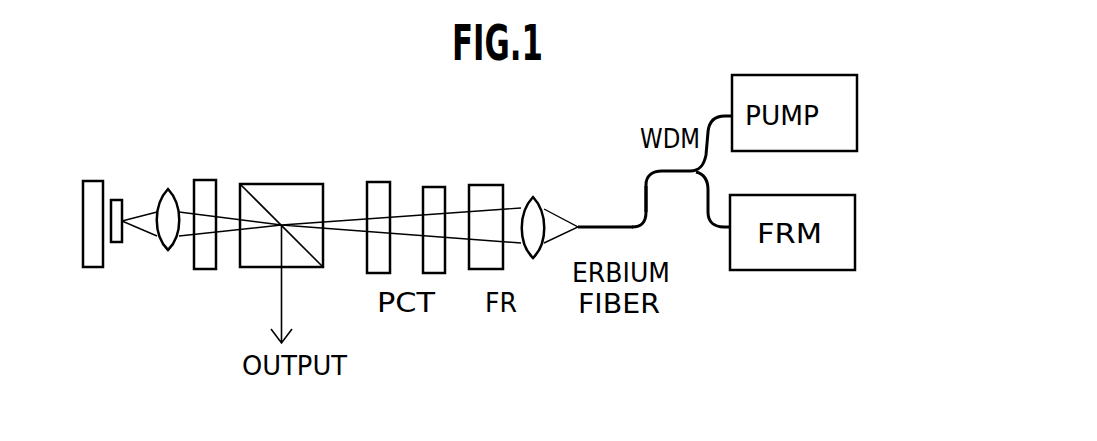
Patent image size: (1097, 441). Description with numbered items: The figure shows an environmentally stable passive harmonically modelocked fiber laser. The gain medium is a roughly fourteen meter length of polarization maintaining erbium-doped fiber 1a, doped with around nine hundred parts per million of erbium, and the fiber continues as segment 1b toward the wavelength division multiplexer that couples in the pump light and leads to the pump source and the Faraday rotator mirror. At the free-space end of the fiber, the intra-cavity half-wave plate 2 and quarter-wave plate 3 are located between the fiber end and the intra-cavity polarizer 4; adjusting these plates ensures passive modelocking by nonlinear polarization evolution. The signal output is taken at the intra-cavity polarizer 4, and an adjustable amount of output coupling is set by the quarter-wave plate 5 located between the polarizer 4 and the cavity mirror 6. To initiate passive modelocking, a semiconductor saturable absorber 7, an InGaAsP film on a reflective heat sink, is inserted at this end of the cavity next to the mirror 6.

The polarization maintaining erbium-doped fiber 1a is at (598, 226).
The erbium fiber (segment to WDM coupler) 1b is at (650, 207).
The half-wave plate 2 is at (458, 182).
The quarter-wave plate 3 is at (377, 182).
The intra-cavity polarizer 4 is at (285, 184).
The quarter-wave plate 5 is at (205, 180).
The cavity mirror 6 is at (83, 197).
The semiconductor saturable absorber 7 is at (114, 200).